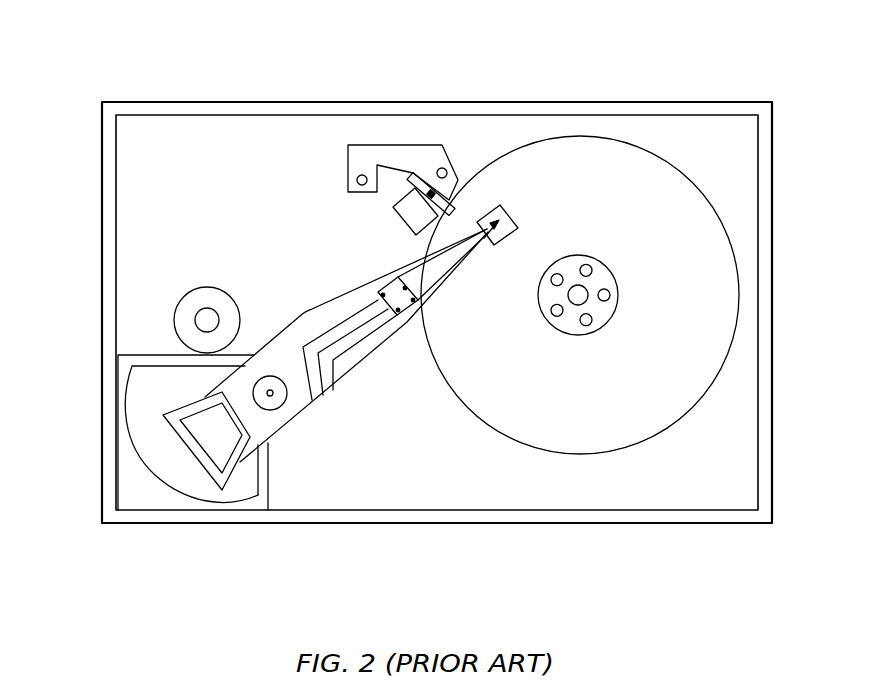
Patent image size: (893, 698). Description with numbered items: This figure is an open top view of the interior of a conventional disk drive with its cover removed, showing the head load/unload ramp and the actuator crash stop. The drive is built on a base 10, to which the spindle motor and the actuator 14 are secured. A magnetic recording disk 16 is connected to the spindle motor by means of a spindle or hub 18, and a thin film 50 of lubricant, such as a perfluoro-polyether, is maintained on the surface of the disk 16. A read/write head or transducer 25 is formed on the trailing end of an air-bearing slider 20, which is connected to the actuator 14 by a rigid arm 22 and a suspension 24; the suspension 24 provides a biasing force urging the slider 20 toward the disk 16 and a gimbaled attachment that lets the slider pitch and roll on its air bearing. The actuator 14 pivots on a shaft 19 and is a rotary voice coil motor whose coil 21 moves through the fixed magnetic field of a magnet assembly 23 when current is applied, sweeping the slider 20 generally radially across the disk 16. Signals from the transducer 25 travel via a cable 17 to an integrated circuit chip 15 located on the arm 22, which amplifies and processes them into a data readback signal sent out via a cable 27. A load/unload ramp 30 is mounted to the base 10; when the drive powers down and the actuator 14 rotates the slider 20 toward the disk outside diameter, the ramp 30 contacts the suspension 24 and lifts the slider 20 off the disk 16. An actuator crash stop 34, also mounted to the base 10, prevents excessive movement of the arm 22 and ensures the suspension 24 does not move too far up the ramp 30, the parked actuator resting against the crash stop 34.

The base 10 is at (772, 162).
The actuator 14 is at (137, 495).
The integrated circuit chip 15 is at (378, 285).
The magnetic recording disk 16 is at (713, 383).
The cable 17 is at (422, 256).
The spindle or hub 18 is at (610, 277).
The shaft 19 is at (290, 400).
The air-bearing slider 20 is at (498, 216).
The coil 21 is at (163, 415).
The rigid arm 22 is at (368, 353).
The magnet assembly 23 is at (167, 450).
The suspension 24 is at (423, 305).
The read/write head or transducer 25 is at (515, 220).
The cable 27 is at (332, 330).
The load/unload ramp 30 is at (436, 182).
The actuator crash stop 34 is at (174, 320).
The thin film of lubricant 50 is at (639, 243).